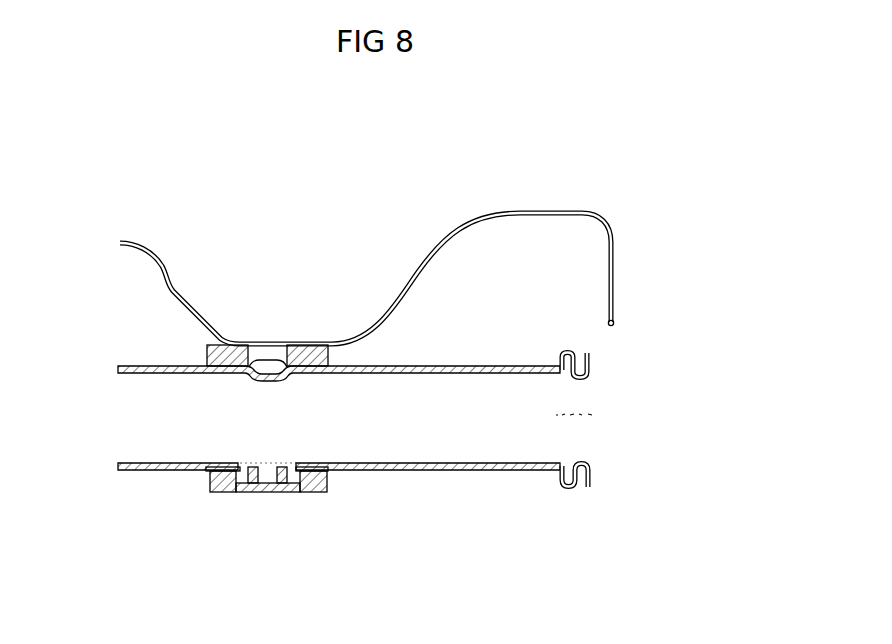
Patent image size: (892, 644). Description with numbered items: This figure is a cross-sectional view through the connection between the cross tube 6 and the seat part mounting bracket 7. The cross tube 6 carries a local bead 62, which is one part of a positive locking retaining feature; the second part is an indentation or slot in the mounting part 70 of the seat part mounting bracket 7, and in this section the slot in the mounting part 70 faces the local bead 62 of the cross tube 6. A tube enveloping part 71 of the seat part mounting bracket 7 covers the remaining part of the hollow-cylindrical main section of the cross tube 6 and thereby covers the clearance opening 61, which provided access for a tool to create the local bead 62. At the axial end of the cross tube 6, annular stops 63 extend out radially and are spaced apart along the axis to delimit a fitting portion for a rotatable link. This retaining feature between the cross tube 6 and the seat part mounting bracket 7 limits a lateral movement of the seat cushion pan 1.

The seat cushion pan 1 is at (541, 210).
The cross tube 6 is at (492, 472).
The seat part mounting bracket 7 is at (204, 491).
The clearance opening 61 is at (267, 462).
The local bead 62 is at (265, 357).
The annular stops 63 is at (589, 477).
The mounting part 70 is at (213, 343).
The tube enveloping part 71 is at (283, 492).